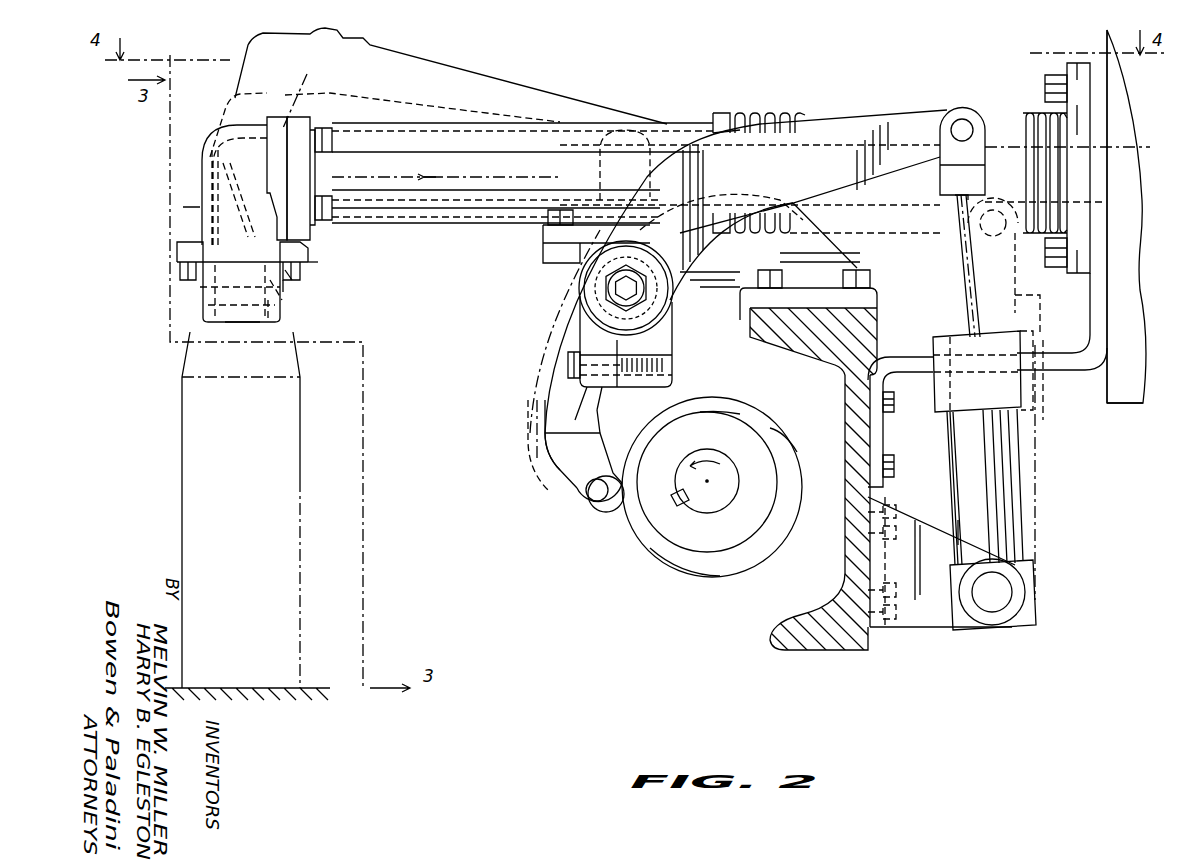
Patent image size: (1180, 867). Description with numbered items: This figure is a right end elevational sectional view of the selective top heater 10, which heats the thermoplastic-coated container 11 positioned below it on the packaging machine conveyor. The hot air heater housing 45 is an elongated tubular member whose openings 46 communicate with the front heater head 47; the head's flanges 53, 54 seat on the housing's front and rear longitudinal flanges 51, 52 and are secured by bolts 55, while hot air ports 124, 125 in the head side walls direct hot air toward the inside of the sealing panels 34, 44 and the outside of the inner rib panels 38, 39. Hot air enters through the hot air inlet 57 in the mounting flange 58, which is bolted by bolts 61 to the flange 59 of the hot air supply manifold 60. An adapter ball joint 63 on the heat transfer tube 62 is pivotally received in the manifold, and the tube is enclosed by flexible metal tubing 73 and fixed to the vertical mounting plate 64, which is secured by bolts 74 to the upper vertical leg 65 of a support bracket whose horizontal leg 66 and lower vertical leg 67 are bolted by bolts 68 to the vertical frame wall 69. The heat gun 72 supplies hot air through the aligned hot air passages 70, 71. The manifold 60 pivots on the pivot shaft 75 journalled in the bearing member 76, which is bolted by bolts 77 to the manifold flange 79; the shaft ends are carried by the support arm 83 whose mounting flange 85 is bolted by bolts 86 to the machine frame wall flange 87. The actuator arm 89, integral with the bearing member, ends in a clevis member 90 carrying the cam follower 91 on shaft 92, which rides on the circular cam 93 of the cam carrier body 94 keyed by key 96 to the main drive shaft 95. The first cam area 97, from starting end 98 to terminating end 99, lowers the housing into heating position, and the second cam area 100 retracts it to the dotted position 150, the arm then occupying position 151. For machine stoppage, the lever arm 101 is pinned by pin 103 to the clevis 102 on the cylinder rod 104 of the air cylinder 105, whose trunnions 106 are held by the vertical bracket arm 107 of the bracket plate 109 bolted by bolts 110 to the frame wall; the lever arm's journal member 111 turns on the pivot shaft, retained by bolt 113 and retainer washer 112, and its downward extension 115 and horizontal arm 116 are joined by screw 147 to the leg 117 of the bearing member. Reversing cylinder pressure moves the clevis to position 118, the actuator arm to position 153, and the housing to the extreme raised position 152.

The selective top heater 10 is at (325, 266).
The container 11 is at (306, 469).
The sealing panel 34 is at (283, 292).
The inner rib panel 38 is at (268, 325).
The inner rib panel 39 is at (200, 320).
The sealing panel 44 is at (205, 302).
The hot air heater housing 45 is at (202, 148).
The openings 46 is at (253, 257).
The front heater head 47 is at (232, 333).
The front longitudinal flange 51 is at (180, 250).
The rear longitudinal flange 52 is at (303, 250).
The longitudinally extended flange 53 is at (183, 270).
The longitudinally extended flange 54 is at (300, 272).
The bolts 55 is at (292, 280).
The hot air inlet 57 is at (421, 94).
The mounting flange 58 is at (280, 128).
The flange 59 is at (303, 187).
The hot air supply manifold 60 is at (470, 130).
The bolts 61 is at (333, 143).
The heat transfer tube 62 is at (995, 140).
The adapter ball joint 63 is at (598, 140).
The vertical mounting plate 64 is at (1078, 63).
The upper vertical leg 65 is at (1095, 305).
The horizontal leg 66 is at (1072, 372).
The lower vertical leg 67 is at (886, 447).
The bolts 68 is at (899, 398).
The vertical frame wall 69 is at (850, 510).
The hot air passage 70 is at (1134, 190).
The hot air passage 71 is at (1130, 148).
The heat gun 72 is at (1132, 411).
The flexible metal tubing 73 is at (758, 116).
The bolts 74 is at (1047, 90).
The pivot shaft 75 is at (580, 290).
The bearing member 76 is at (549, 273).
The bolts 77 is at (560, 210).
The horizontally extended flange 79 is at (545, 237).
The support arm 83 is at (845, 255).
The horizontal mounting flange 85 is at (878, 300).
The bolts 86 is at (762, 275).
The machine frame wall flange 87 is at (795, 338).
The actuator arm 89 is at (545, 403).
The clevis member 90 is at (560, 449).
The cam follower 91 is at (592, 502).
The shaft 92 is at (590, 490).
The circular cam 93 is at (633, 560).
The cam carrier body 94 is at (742, 446).
The main drive shaft 95 is at (728, 483).
The key 96 is at (683, 507).
The first cam area 97 is at (712, 405).
The starting end 98 is at (606, 512).
The terminating end 99 is at (772, 437).
The second cam area 100 is at (724, 577).
The lever arm 101 is at (848, 125).
The clevis 102 is at (940, 183).
The pin 103 is at (962, 118).
The cylinder rod 104 is at (968, 315).
The air cylinder 105 is at (1039, 521).
The trunnions 106 is at (1002, 600).
The vertical bracket arm 107 is at (940, 620).
The vertical bracket plate 109 is at (880, 632).
The bolts 110 is at (898, 518).
The journal member 111 is at (688, 283).
The retainer washer 112 is at (600, 297).
The bolt 113 is at (608, 302).
The downward extension 115 is at (672, 340).
The horizontal arm 116 is at (672, 366).
The leg 117 is at (595, 386).
The dotted position of clevis 118 is at (1015, 288).
The hot air ports 124 is at (200, 287).
The hot air ports 125 is at (275, 290).
The screw 147 is at (568, 365).
The retracted position 150 is at (218, 107).
The dotted line position of actuator arm 151 is at (537, 428).
The extreme raised inactive position 152 is at (246, 40).
The dotted line position of actuator arm 153 is at (539, 490).